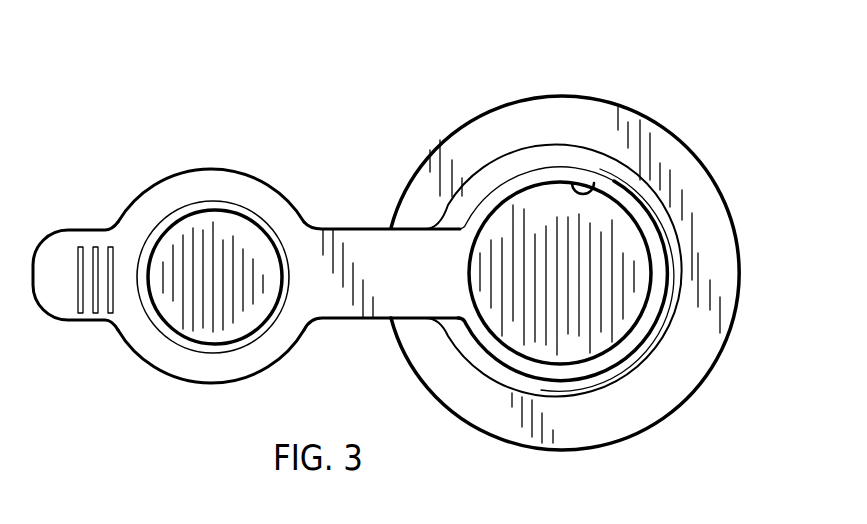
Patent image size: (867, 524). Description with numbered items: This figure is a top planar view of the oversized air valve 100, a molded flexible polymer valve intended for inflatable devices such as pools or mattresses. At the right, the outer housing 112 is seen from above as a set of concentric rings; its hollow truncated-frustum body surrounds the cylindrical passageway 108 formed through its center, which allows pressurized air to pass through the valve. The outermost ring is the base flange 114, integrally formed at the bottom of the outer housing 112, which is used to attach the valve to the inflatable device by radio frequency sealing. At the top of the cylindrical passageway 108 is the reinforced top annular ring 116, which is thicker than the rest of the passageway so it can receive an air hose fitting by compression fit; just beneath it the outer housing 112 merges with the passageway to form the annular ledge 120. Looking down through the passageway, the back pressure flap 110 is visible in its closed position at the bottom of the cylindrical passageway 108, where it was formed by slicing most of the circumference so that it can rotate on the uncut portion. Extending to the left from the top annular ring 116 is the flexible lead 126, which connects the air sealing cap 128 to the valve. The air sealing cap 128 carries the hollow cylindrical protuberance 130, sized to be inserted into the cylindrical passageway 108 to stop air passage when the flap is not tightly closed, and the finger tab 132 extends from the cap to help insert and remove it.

The oversized air valve 100 is at (414, 119).
The cylindrical passageway 108 is at (597, 192).
The back pressure flap 110 is at (572, 226).
The outer housing 112 is at (652, 362).
The base flange 114 is at (722, 244).
The top annular ring 116 is at (582, 368).
The annular ledge 120 is at (553, 150).
The flexible lead 126 is at (354, 228).
The air sealing cap 128 is at (226, 168).
The hollow cylindrical protuberance 130 is at (177, 213).
The finger tab 132 is at (62, 322).